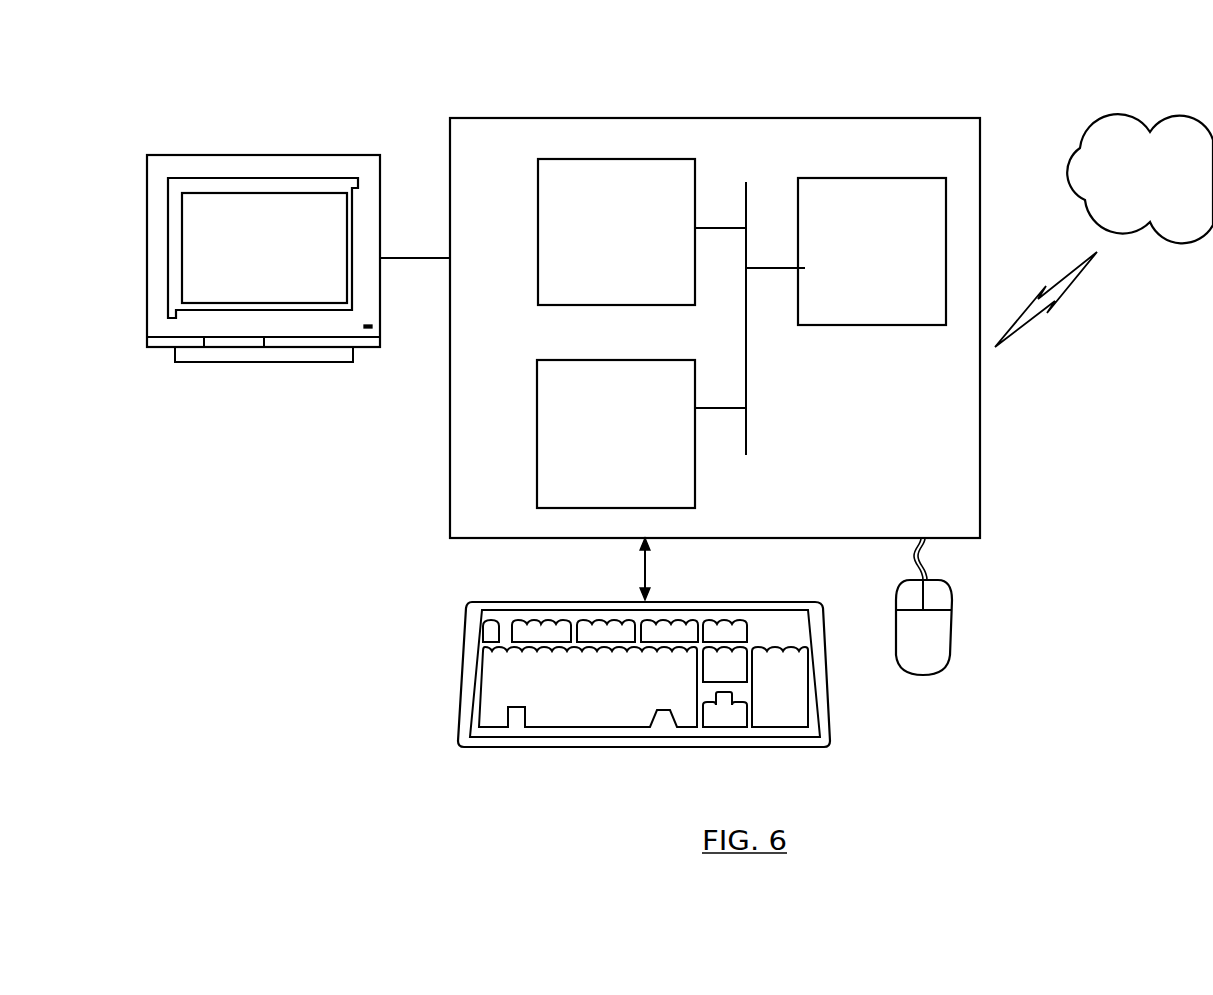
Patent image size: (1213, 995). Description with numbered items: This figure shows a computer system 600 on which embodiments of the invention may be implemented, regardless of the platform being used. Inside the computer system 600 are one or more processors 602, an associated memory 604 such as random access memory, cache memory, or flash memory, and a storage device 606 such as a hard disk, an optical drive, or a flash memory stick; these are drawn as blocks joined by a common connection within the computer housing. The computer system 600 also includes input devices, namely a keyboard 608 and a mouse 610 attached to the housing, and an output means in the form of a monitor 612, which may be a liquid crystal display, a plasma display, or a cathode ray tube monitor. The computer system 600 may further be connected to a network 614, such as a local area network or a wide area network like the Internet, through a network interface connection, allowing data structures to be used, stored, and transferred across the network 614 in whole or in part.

The computer system 600 is at (748, 63).
The processor 602 is at (896, 262).
The memory 604 is at (637, 242).
The storage device 606 is at (632, 444).
The keyboard 608 is at (608, 701).
The mouse 610 is at (944, 639).
The monitor 612 is at (284, 262).
The network 614 is at (1170, 180).